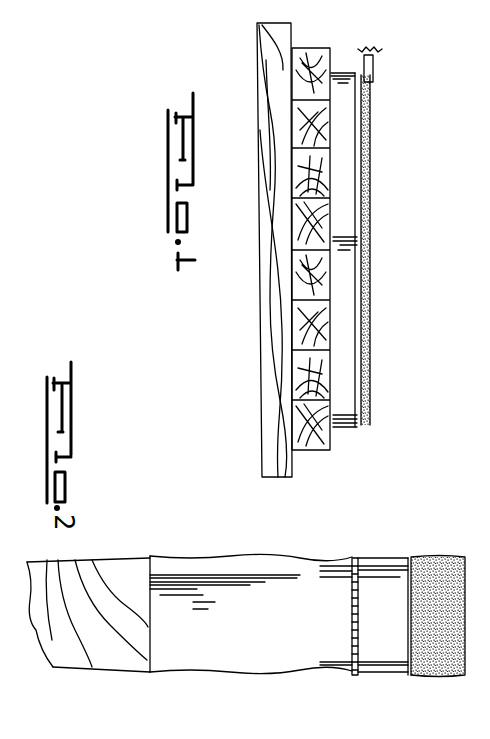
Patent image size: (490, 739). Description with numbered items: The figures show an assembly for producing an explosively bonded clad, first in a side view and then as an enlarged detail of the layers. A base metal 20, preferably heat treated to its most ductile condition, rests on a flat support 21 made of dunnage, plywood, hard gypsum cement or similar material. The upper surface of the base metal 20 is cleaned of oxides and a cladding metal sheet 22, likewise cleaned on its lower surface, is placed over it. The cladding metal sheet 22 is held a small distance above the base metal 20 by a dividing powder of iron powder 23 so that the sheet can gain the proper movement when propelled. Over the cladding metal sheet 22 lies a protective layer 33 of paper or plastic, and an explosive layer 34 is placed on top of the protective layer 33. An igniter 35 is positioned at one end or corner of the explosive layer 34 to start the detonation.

In FIG. 1, the base metal 20 is at (337, 425).
In FIG. 2, the base metal 20 is at (292, 668).
In FIG. 1, the flat support 21 is at (312, 450).
In FIG. 2, the flat support 21 is at (86, 665).
In FIG. 1, the cladding metal sheet 22 is at (357, 425).
In FIG. 2, the cladding metal sheet 22 is at (382, 672).
In FIG. 2, the iron powder 23 is at (355, 676).
In FIG. 2, the protective layer 33 is at (409, 673).
In FIG. 1, the explosive layer 34 is at (368, 423).
In FIG. 2, the explosive layer 34 is at (437, 672).
In FIG. 1, the igniter 35 is at (375, 80).